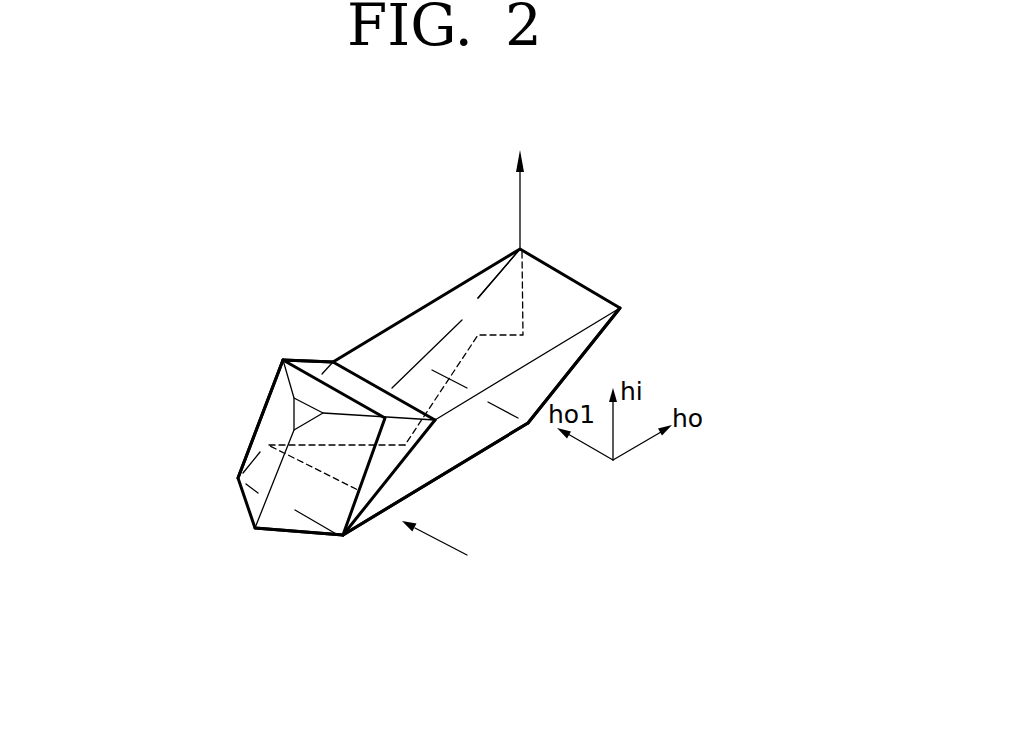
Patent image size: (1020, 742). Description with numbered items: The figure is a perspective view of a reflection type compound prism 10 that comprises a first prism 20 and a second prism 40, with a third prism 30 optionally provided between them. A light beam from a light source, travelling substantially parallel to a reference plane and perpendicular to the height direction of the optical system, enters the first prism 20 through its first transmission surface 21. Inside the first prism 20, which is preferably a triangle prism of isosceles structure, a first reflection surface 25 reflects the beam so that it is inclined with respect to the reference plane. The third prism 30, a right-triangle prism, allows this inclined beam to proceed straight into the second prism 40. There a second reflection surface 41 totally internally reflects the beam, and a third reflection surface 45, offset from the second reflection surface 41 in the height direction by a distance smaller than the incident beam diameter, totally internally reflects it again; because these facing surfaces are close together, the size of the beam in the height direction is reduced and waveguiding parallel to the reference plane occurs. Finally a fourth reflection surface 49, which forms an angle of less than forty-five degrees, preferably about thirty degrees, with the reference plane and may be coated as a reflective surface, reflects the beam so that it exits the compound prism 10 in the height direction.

The reflection type compound prism 10 is at (240, 293).
The first prism 20 is at (302, 378).
The first transmission surface 21 is at (277, 537).
The first reflection surface 25 is at (264, 412).
The third prism 30 is at (410, 475).
The second prism 40 is at (584, 266).
The second reflection surface 41 is at (503, 435).
The third reflection surface 45 is at (442, 320).
The fourth reflection surface 49 is at (587, 352).